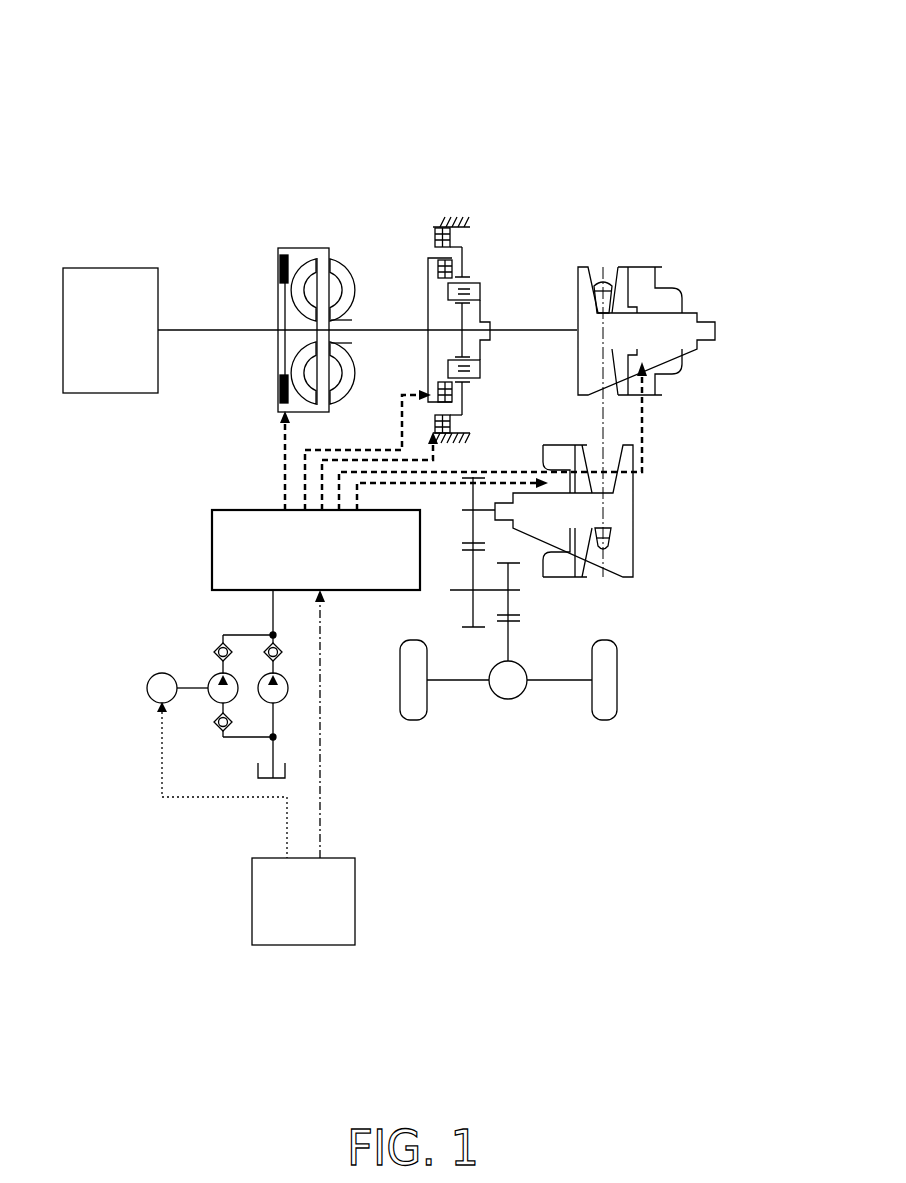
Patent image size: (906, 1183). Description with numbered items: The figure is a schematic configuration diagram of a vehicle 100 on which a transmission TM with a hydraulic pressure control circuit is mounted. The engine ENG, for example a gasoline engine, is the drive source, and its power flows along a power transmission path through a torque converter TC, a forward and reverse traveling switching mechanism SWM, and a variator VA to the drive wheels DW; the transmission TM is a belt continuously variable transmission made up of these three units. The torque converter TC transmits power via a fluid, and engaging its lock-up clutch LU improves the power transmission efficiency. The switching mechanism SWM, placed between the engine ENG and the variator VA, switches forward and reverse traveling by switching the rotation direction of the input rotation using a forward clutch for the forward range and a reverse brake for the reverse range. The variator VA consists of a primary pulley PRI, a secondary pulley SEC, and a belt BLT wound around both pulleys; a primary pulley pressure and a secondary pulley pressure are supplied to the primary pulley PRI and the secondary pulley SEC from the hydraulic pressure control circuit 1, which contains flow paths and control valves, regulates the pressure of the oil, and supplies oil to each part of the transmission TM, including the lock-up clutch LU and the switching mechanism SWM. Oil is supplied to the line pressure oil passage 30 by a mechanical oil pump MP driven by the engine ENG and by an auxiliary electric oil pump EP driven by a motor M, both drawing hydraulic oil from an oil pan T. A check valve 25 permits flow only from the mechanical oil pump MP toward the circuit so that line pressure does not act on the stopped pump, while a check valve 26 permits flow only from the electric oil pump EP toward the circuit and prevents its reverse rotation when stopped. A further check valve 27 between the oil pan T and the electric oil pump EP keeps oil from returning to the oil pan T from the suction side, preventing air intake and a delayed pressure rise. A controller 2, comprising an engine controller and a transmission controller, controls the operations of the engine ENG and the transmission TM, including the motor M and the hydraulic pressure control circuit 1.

The vehicle 100 is at (193, 64).
The transmission TM is at (697, 108).
The engine ENG is at (108, 268).
The torque converter TC is at (313, 238).
The lock-up clutch LU is at (280, 402).
The forward and reverse traveling switching mechanism SWM is at (437, 198).
The variator VA is at (634, 226).
The primary pulley PRI is at (681, 292).
The secondary pulley SEC is at (634, 535).
The belt BLT is at (607, 578).
The drive wheels DW is at (400, 680).
The hydraulic pressure control circuit 1 is at (212, 558).
The line pressure oil passage 30 is at (273, 612).
The check valve 25 is at (278, 647).
The check valve 26 is at (219, 646).
The check valve 27 is at (216, 734).
The mechanical oil pump MP is at (284, 701).
The electric oil pump EP is at (213, 701).
The motor M is at (162, 672).
The oil pan T is at (258, 772).
The controller 2 is at (300, 945).